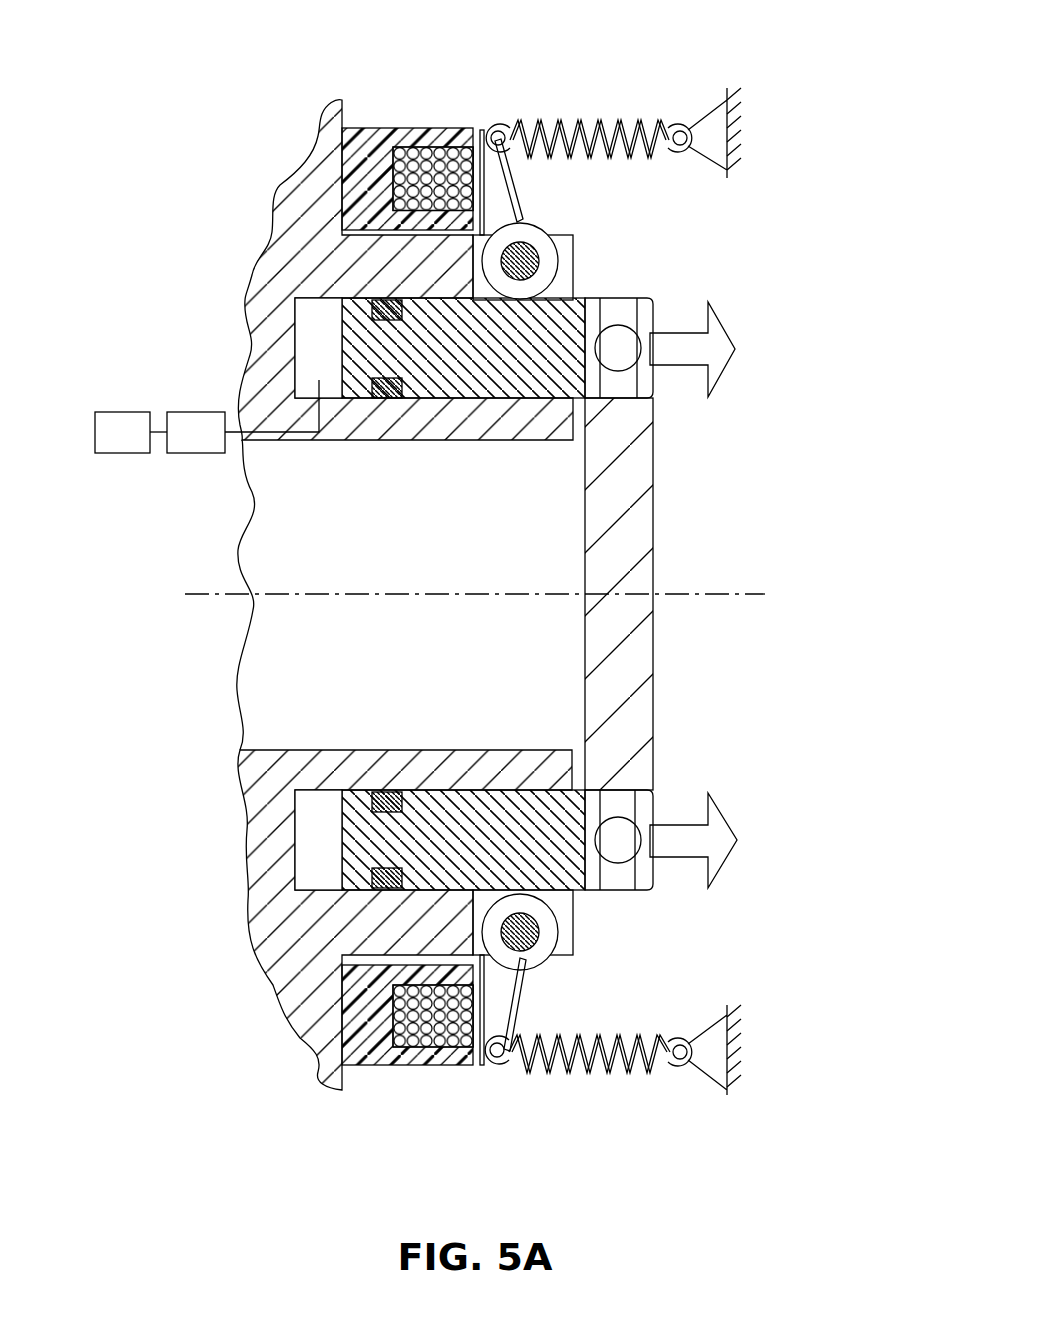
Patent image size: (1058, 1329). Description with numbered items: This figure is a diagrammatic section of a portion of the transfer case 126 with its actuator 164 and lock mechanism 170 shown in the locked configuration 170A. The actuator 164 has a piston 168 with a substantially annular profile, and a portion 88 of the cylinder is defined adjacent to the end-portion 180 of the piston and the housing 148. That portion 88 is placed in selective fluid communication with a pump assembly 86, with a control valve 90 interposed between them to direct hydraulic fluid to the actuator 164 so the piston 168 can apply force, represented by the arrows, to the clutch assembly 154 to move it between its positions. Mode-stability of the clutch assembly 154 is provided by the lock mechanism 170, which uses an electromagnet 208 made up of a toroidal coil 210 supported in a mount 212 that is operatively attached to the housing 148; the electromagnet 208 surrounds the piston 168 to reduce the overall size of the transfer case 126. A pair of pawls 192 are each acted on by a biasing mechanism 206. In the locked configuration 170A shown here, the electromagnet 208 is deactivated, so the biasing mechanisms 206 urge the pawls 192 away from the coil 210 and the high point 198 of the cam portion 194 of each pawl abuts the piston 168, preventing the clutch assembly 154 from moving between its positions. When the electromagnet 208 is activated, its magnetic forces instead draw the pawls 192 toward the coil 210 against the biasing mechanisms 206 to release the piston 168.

The transfer case 126 is at (236, 116).
The housing 148 is at (297, 177).
The actuator 164 is at (337, 296).
The piston 168 is at (563, 872).
The end-portion 180 is at (291, 328).
The portion of the cylinder 88 is at (318, 347).
The pump assembly 86 is at (131, 432).
The control valve 90 is at (196, 432).
The mount 212 is at (369, 135).
The electromagnet 208 is at (411, 127).
The toroidal coil 210 is at (448, 160).
The cam portion 194 is at (539, 253).
The pawls 192 is at (525, 208).
The biasing mechanisms 206 is at (622, 115).
The lock mechanism 170 is at (548, 187).
The locked configuration 170A is at (714, 1050).
The high point 198 is at (512, 298).
The clutch assembly 154 is at (629, 543).